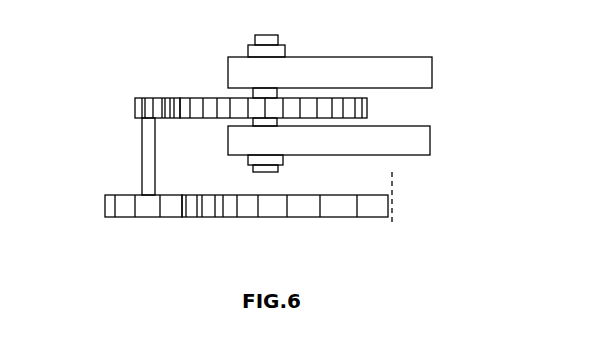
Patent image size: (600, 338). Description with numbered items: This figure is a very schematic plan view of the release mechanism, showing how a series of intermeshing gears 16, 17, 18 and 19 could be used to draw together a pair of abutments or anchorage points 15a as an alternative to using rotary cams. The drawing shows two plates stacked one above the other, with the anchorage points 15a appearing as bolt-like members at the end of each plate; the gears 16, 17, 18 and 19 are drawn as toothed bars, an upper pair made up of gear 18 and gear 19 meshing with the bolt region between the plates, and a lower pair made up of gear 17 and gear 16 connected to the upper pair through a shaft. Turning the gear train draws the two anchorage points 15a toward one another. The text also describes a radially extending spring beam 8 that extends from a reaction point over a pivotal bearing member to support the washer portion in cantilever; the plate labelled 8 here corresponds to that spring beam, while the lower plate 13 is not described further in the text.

The spring beam 8 is at (386, 70).
The lower plate 13 is at (422, 145).
The abutments or anchorage points 15a is at (283, 45).
The intermeshing gear 16 is at (297, 208).
The intermeshing gear 17 is at (127, 212).
The intermeshing gear 18 is at (143, 98).
The intermeshing gear 19 is at (223, 97).